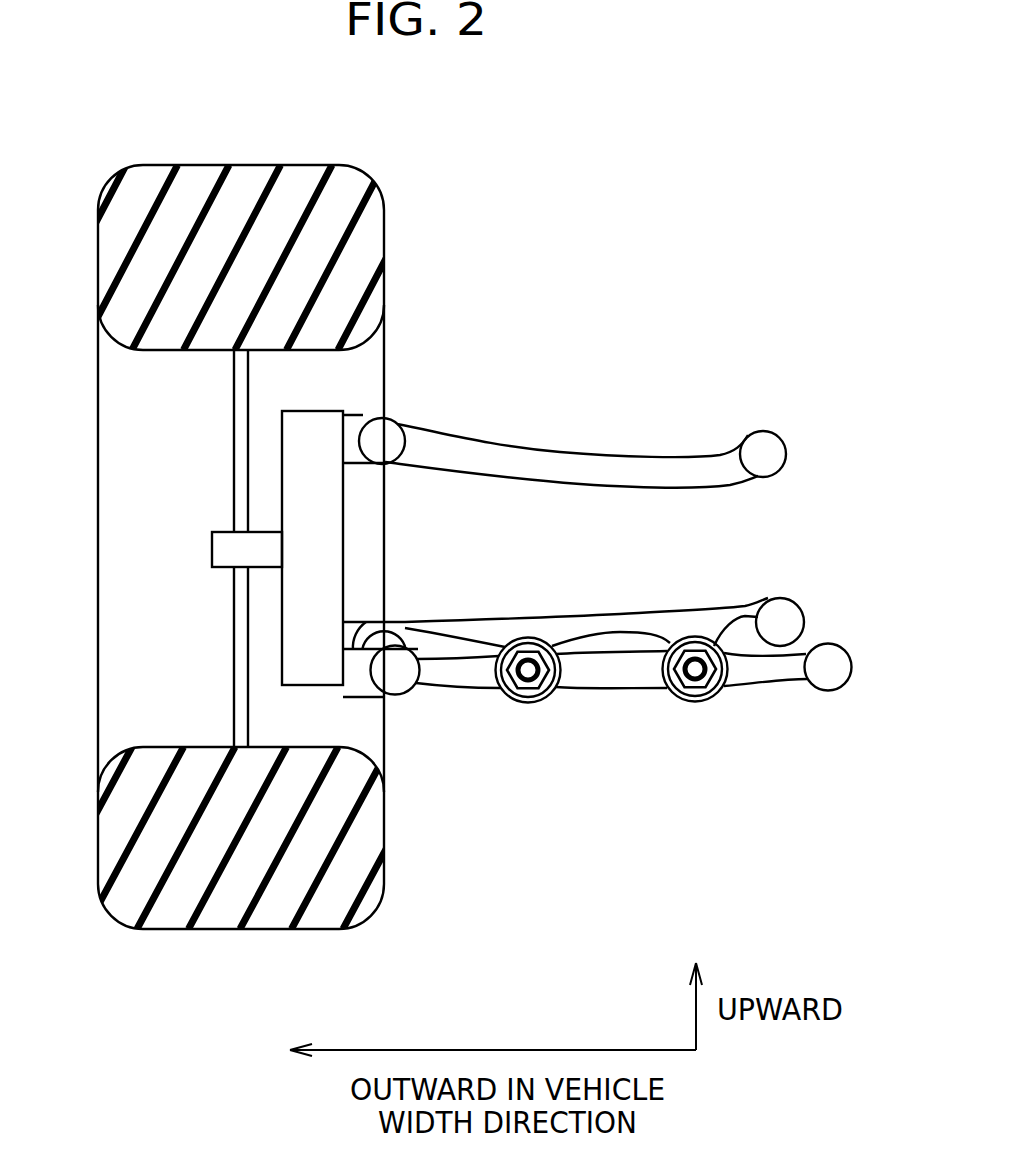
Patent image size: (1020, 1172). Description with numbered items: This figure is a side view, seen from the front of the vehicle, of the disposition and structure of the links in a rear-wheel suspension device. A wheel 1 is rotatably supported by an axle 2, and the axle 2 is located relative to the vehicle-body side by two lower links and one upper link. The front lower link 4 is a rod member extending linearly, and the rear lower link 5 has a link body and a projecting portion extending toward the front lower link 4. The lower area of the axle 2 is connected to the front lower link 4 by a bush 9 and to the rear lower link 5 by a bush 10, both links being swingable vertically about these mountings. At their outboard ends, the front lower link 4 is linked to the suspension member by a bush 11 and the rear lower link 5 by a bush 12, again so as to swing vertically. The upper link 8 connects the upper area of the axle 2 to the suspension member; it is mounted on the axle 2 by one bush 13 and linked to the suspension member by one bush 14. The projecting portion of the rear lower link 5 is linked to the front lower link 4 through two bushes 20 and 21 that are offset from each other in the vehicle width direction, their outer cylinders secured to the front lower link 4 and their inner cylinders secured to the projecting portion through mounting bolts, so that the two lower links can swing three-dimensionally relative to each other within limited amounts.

The wheel 1 is at (136, 270).
The axle 2 is at (297, 477).
The front lower link 4 is at (613, 670).
The rear lower link 5 is at (603, 625).
The upper link 8 is at (578, 470).
The bush 9 is at (395, 680).
The bush 10 is at (383, 640).
The bush 11 is at (830, 676).
The bush 12 is at (782, 617).
The bush 13 is at (383, 440).
The bush 14 is at (765, 450).
The bush 20 is at (695, 690).
The bush 21 is at (528, 690).